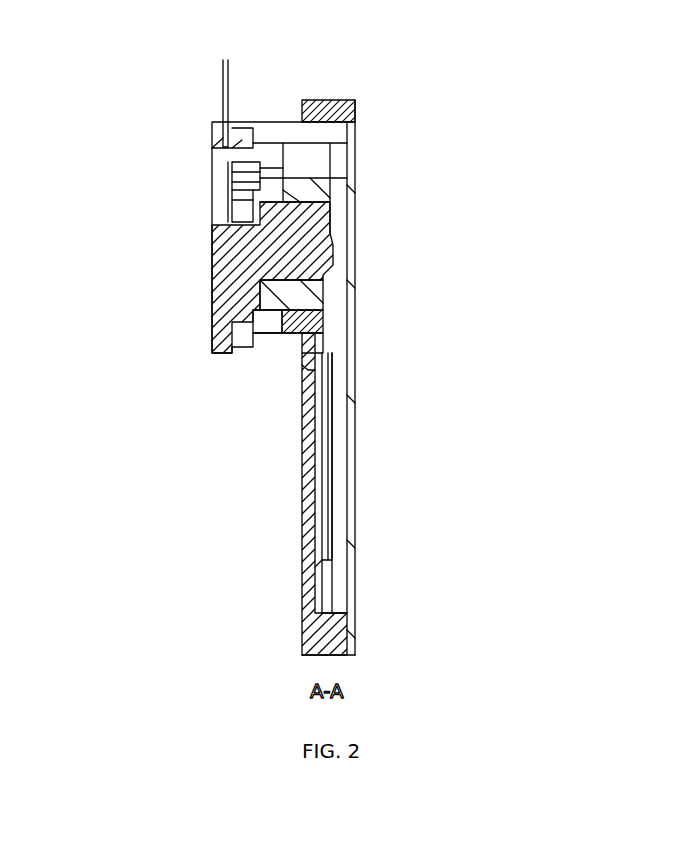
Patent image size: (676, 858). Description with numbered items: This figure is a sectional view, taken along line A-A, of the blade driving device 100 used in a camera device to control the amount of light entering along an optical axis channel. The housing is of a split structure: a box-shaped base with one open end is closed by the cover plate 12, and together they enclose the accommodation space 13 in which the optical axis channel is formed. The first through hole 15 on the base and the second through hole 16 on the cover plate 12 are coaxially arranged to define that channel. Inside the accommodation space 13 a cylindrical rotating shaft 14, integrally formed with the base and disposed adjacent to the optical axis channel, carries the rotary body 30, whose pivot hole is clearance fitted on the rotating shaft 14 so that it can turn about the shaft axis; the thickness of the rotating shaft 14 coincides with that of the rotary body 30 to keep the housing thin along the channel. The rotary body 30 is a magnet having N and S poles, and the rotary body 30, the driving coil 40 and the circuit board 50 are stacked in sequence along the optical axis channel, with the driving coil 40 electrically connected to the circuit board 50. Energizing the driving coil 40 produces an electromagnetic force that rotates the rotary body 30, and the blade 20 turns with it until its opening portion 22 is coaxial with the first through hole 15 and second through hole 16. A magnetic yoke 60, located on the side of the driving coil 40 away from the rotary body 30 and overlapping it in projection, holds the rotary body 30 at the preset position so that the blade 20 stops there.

The blade driving device 100 is at (402, 68).
The cover plate 12 is at (355, 300).
The accommodation space 13 is at (338, 493).
The rotating shaft 14 is at (310, 263).
The first through hole 15 is at (302, 442).
The second through hole 16 is at (355, 408).
The blade 20 is at (330, 150).
The opening portion 22 is at (325, 450).
The rotary body 30 is at (305, 240).
The driving coil 40 is at (233, 218).
The circuit board 50 is at (223, 87).
The magnetic yoke 60 is at (233, 188).